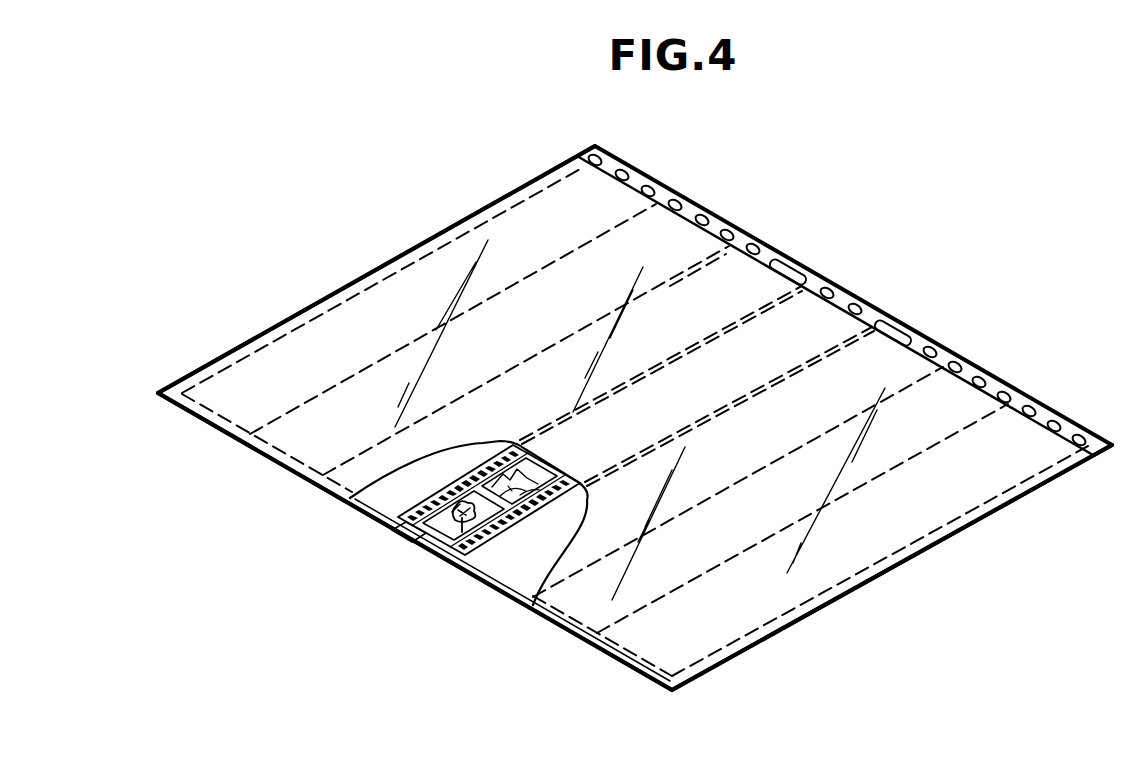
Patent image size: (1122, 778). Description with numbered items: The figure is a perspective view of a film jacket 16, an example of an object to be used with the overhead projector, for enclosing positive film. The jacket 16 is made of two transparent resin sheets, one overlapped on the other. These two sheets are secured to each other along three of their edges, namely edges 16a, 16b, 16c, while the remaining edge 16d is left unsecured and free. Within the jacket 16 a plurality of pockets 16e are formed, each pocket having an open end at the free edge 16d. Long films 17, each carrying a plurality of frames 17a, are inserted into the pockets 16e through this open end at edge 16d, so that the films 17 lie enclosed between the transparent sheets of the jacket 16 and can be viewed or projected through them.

The jacket 16 is at (367, 480).
The edge 16a is at (870, 582).
The edge 16b is at (512, 593).
The edge 16c is at (430, 236).
The edge 16d is at (872, 322).
The pockets 16e is at (660, 203).
The long films 17 is at (427, 537).
The frames 17a is at (410, 535).